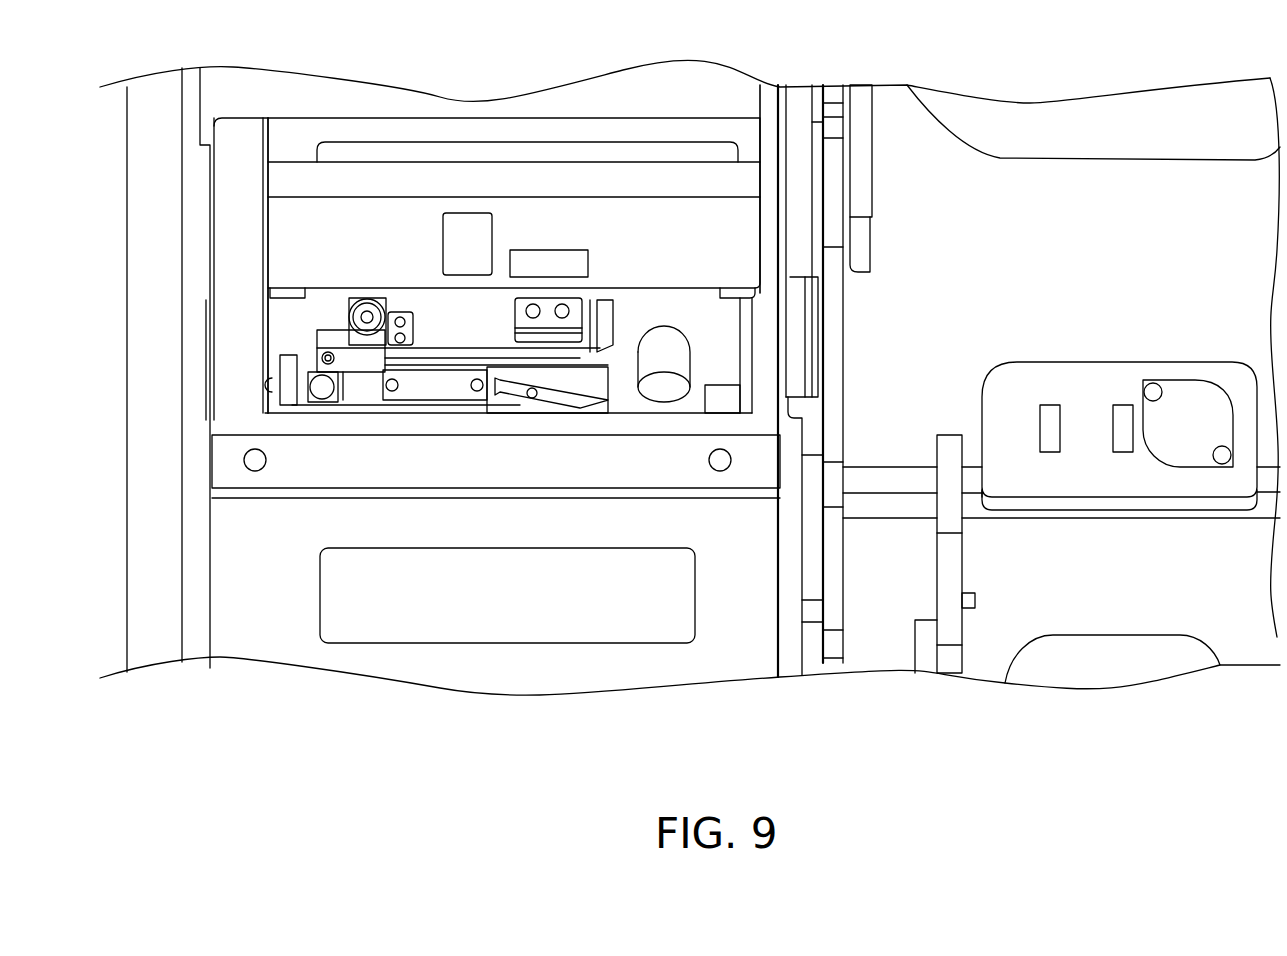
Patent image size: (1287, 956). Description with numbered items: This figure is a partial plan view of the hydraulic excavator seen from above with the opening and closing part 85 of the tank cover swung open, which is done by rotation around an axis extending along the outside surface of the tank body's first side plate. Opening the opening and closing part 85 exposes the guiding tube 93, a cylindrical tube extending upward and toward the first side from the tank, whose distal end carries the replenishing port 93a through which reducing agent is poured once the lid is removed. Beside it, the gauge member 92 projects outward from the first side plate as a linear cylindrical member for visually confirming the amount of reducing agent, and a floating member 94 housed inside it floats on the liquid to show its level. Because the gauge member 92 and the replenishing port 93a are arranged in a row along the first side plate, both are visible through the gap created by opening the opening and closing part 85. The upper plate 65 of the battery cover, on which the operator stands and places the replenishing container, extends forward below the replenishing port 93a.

The upper plate 65 is at (287, 588).
The opening and closing part 85 is at (420, 237).
The gauge member 92 is at (512, 398).
The guiding tube 93 is at (685, 345).
The replenishing port 93a is at (708, 403).
The floating member 94 is at (533, 396).